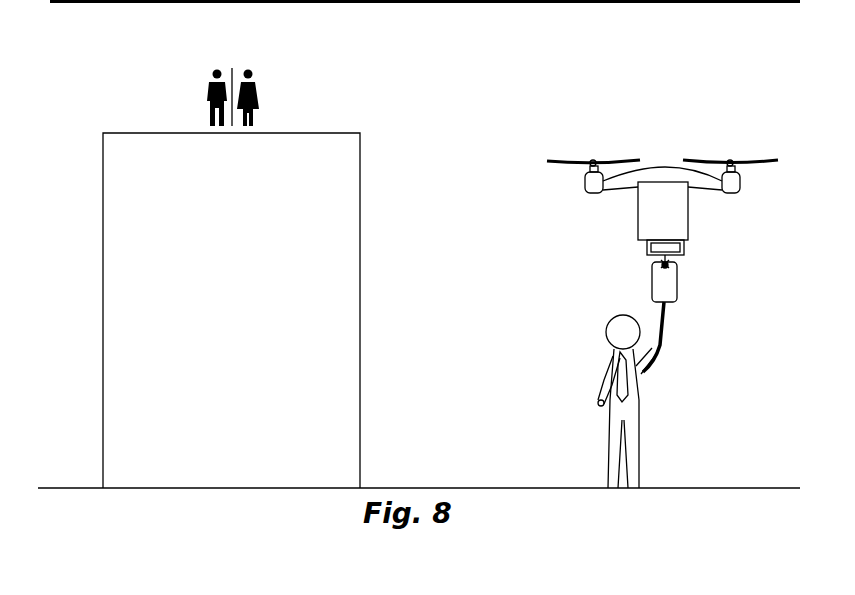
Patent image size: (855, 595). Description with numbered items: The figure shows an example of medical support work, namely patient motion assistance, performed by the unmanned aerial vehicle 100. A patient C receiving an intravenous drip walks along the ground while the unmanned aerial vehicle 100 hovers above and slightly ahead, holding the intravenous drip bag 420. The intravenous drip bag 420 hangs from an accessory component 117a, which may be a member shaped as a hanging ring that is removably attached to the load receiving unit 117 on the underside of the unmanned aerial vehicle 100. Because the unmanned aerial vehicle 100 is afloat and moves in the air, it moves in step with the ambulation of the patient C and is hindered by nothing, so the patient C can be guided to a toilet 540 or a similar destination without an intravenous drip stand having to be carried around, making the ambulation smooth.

The toilet 540 is at (327, 142).
The unmanned aerial vehicle 100 is at (700, 207).
The load receiving unit 117 is at (646, 243).
The accessory component 117a is at (672, 258).
The intravenous drip bag 420 is at (675, 292).
The patient C is at (641, 406).